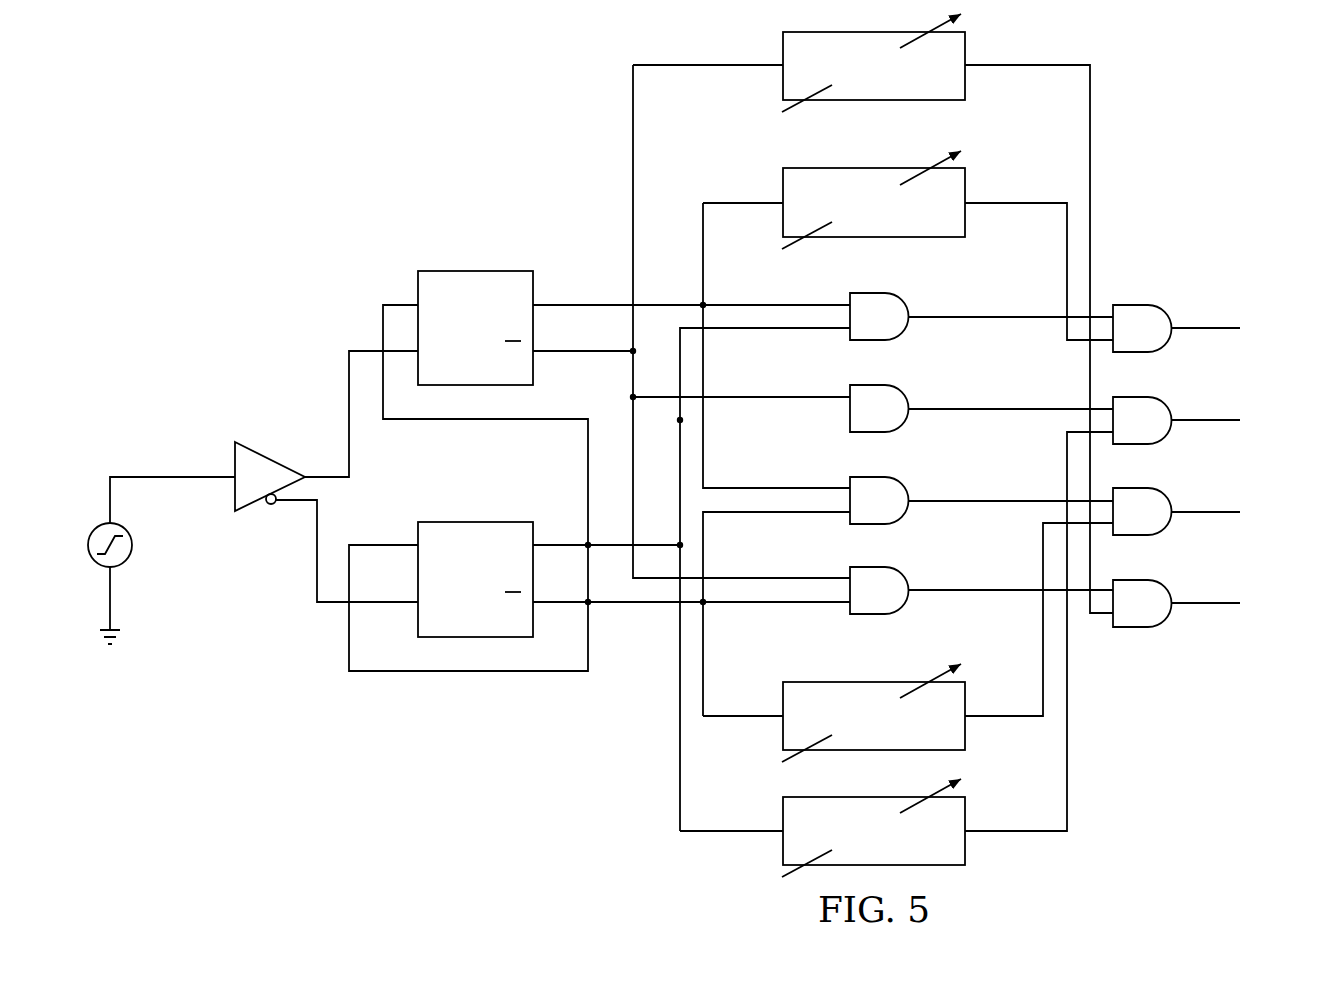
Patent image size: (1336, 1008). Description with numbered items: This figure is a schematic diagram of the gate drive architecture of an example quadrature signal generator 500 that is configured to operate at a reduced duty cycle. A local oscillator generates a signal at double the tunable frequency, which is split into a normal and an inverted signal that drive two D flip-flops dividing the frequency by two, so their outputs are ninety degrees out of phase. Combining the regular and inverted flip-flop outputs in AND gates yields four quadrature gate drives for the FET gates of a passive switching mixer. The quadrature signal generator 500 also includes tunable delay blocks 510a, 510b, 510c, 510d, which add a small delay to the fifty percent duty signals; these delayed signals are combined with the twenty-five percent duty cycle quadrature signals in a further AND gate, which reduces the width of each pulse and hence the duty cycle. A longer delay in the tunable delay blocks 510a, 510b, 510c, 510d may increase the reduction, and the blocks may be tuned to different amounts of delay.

The quadrature signal generator 500 is at (426, 143).
The tunable delay block 510a is at (783, 56).
The tunable delay block 510b is at (783, 194).
The tunable delay block 510c is at (965, 726).
The tunable delay block 510d is at (783, 840).